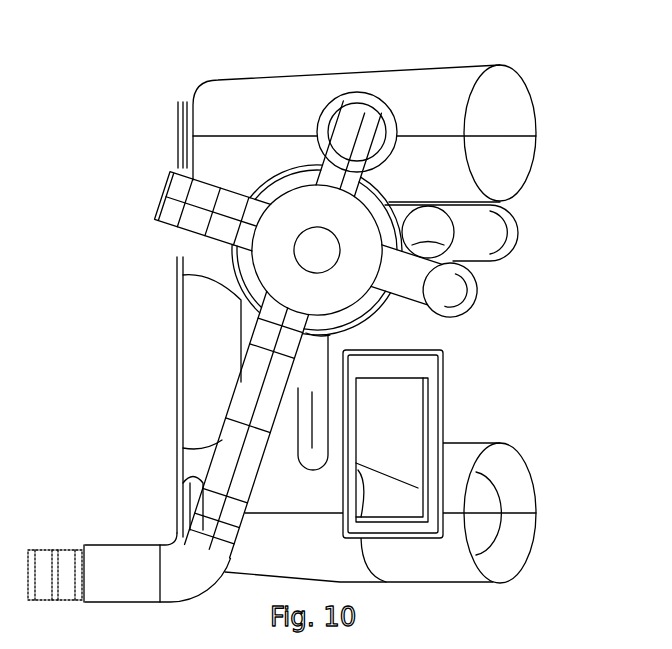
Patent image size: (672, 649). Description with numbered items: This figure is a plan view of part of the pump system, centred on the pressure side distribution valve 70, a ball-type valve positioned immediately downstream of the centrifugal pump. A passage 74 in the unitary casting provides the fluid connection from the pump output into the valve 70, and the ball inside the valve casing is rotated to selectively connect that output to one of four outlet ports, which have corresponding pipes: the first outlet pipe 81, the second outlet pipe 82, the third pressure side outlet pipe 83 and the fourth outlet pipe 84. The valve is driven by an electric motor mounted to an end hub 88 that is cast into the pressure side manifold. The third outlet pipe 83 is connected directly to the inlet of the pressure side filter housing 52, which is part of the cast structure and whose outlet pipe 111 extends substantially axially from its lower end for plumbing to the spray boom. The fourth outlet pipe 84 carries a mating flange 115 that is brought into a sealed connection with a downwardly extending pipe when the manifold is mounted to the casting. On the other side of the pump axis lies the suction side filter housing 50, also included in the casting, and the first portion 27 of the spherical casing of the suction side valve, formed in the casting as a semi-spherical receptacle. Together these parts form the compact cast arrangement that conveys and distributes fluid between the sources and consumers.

The passage 74 is at (169, 269).
The pressure side distribution valve 70 is at (303, 177).
The first outlet pipe 81 is at (270, 367).
The second outlet pipe 82 is at (222, 227).
The third pressure side outlet pipe 83 is at (345, 143).
The fourth outlet pipe 84 is at (442, 304).
The end hub 88 is at (348, 207).
The pressure side filter housing 52 is at (459, 64).
The suction side filter housing 50 is at (426, 576).
The first portion of spherical casing 27 is at (190, 323).
The outlet pipe 111 is at (184, 102).
The mating flange 115 is at (466, 315).